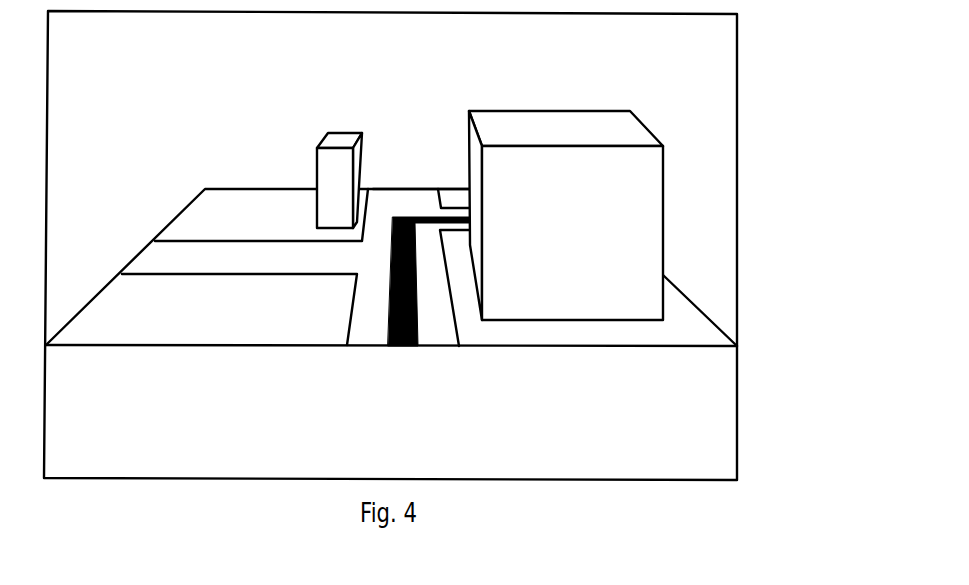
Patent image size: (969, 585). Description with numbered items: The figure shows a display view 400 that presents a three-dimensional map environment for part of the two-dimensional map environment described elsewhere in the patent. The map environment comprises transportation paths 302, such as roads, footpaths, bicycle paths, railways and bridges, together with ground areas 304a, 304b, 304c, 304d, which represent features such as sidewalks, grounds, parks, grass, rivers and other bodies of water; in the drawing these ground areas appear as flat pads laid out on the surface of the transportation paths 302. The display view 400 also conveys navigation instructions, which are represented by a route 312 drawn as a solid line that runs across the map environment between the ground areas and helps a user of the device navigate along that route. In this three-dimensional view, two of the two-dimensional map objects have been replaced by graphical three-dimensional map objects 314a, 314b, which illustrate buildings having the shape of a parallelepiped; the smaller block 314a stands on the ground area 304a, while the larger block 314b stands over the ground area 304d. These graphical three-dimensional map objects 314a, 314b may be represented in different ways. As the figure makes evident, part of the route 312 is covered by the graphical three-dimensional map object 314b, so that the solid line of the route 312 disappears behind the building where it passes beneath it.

The display view 400 is at (690, 500).
The transportation paths 302 is at (358, 322).
The ground area 304a is at (215, 212).
The ground area 304b is at (447, 198).
The ground area 304c is at (258, 318).
The ground area 304d is at (550, 333).
The route 312 is at (400, 346).
The graphical three-dimensional map object 314a is at (328, 177).
The graphical three-dimensional map object 314b is at (505, 160).